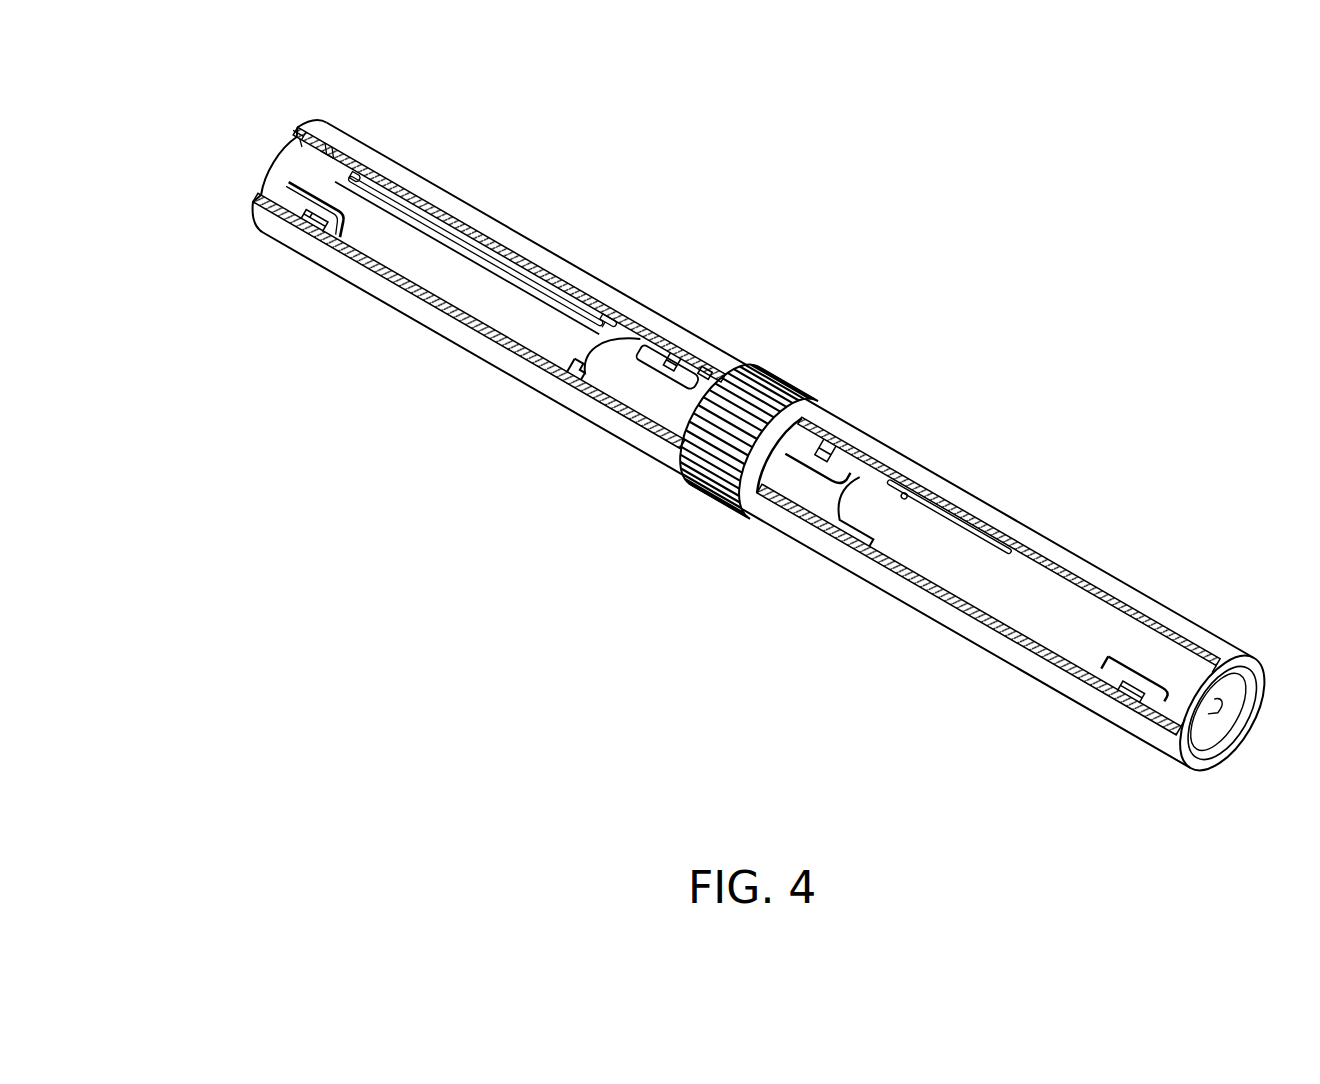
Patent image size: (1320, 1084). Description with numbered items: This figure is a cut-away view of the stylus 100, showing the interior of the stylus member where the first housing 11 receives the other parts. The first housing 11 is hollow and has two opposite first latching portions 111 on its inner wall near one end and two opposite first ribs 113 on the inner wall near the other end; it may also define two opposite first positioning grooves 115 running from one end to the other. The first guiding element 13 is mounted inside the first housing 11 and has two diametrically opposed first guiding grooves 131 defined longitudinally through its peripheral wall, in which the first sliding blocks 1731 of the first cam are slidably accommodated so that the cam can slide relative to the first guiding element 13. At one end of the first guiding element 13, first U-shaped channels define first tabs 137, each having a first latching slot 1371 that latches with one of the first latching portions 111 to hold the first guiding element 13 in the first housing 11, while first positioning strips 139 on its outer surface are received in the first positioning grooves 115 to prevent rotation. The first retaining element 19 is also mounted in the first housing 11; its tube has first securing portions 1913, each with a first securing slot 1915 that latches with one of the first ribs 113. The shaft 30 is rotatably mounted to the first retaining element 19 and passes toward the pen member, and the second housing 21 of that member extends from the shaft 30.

The stylus 100 is at (973, 281).
The first housing 11 is at (428, 192).
The first latching portion 111 is at (304, 238).
The first rib 113 is at (698, 377).
The first positioning groove 115 is at (326, 150).
The first guiding element 13 is at (427, 273).
The first guiding groove 131 is at (508, 268).
The first tab 137 is at (296, 213).
The first latching slot 1371 is at (303, 224).
The first positioning strip 139 is at (305, 141).
The first sliding block 1731 is at (603, 318).
The first retaining element 19 is at (647, 403).
The first securing portion 1913 is at (706, 372).
The first securing slot 1915 is at (668, 360).
The second housing 21 is at (1047, 553).
The shaft 30 is at (700, 487).